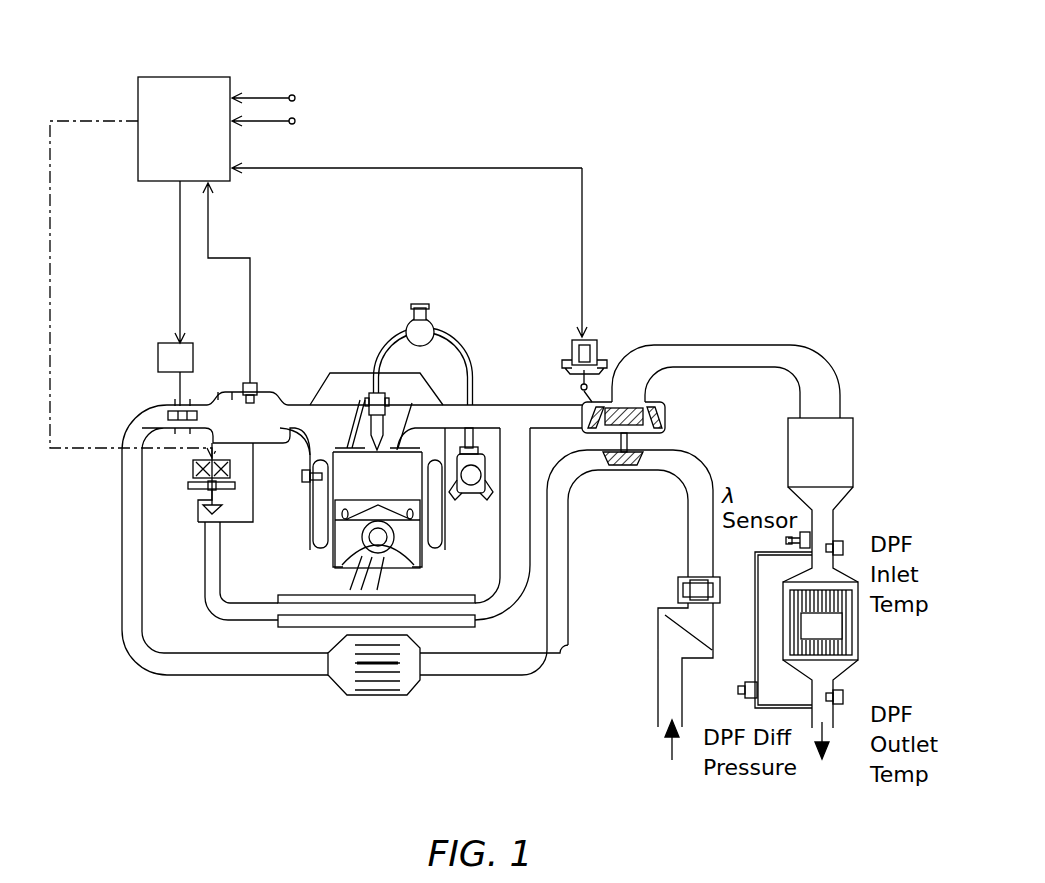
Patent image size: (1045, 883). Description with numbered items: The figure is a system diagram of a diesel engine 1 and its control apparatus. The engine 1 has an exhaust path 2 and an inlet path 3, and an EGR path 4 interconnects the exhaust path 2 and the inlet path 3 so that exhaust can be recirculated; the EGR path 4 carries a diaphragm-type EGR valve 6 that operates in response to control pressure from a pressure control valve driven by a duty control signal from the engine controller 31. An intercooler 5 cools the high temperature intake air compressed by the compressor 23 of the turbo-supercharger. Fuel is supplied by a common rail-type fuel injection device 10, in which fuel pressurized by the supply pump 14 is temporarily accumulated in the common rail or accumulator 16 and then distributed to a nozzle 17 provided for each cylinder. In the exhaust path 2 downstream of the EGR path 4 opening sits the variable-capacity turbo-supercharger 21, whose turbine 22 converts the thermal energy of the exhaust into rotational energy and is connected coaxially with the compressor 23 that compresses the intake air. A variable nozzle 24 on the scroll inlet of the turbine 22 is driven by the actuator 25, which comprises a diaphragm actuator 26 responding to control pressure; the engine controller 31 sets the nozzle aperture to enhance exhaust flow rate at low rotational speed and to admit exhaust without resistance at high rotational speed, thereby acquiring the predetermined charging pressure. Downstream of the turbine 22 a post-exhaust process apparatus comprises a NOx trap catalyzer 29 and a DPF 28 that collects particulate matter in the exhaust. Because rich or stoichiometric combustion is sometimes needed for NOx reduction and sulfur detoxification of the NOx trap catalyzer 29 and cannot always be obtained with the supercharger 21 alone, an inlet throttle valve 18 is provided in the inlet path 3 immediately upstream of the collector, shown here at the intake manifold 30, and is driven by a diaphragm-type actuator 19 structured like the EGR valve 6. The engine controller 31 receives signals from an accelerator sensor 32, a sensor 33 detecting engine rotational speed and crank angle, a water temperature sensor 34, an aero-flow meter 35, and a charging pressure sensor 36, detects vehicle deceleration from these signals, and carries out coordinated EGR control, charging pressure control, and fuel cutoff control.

The engine 1 is at (355, 383).
The exhaust path 2 is at (636, 345).
The inlet path 3 is at (572, 655).
The EGR path 4 is at (205, 570).
The intercooler 5 is at (418, 692).
The EGR valve 6 is at (192, 478).
The fuel injection device 10 is at (455, 340).
The supply pump 14 is at (487, 445).
The common rail 16 is at (424, 306).
The nozzle 17 is at (372, 393).
The inlet throttle valve 18 is at (166, 408).
The actuator 19 is at (158, 348).
The variable-capacity turbo-supercharger 21 is at (668, 436).
The turbine 22 is at (622, 394).
The compressor 23 is at (623, 468).
The variable nozzle 24 is at (660, 412).
The actuator 25 is at (562, 362).
The diaphragm actuator 26 is at (568, 342).
The DPF 28 is at (858, 652).
The NOx trap catalyzer 29 is at (855, 450).
The intake manifold 30 is at (224, 392).
The engine controller 31 is at (195, 77).
The accelerator sensor 32 is at (296, 97).
The sensor 33 is at (296, 121).
The water temperature sensor 34 is at (305, 473).
The aero-flow meter 35 is at (678, 590).
The charging pressure sensor 36 is at (262, 384).